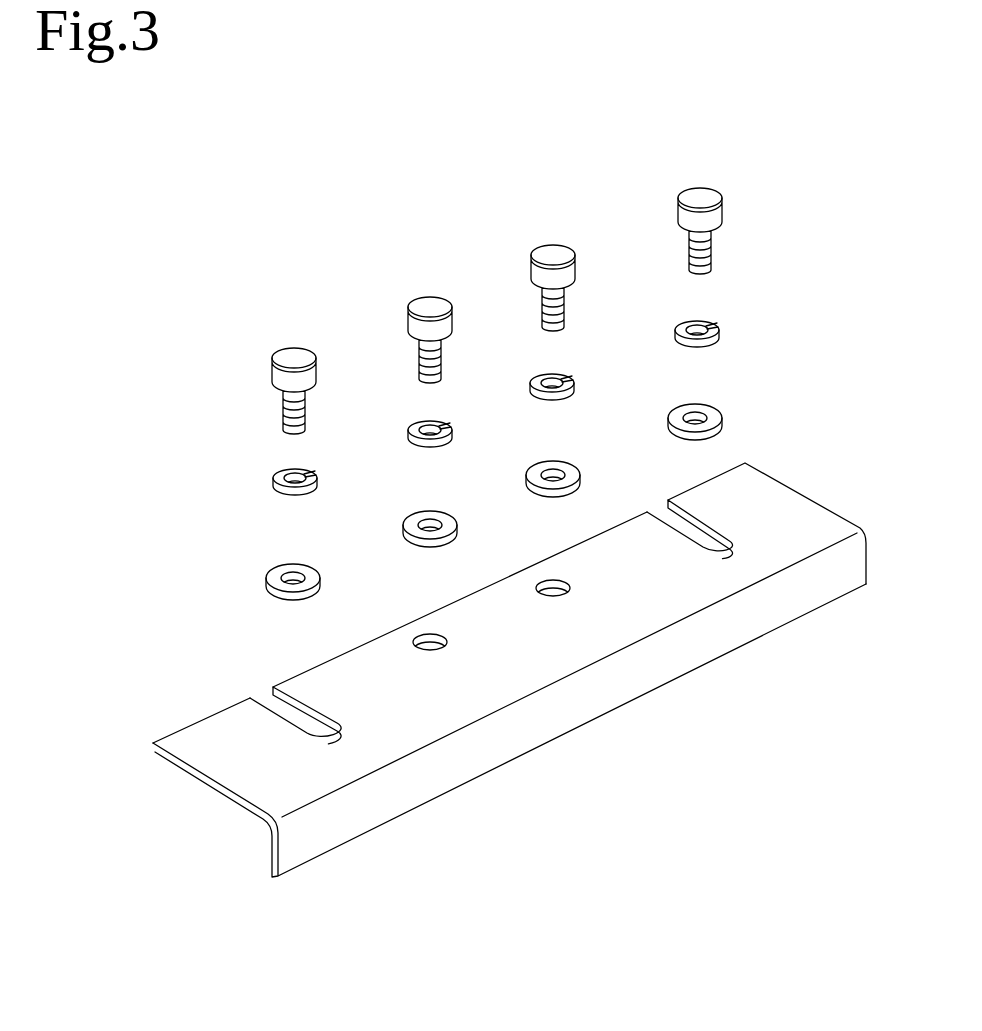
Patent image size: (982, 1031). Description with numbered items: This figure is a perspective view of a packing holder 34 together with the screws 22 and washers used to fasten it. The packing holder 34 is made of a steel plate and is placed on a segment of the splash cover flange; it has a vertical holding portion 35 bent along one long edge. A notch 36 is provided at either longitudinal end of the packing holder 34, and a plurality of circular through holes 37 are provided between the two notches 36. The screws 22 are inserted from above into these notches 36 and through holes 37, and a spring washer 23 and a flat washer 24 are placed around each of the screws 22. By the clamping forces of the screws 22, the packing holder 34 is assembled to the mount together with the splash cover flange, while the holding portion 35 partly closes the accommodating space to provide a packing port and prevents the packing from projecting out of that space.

The screw 22 is at (700, 188).
The spring washer 23 is at (676, 337).
The flat washer 24 is at (763, 431).
The packing holder 34 is at (222, 792).
The holding portion 35 is at (593, 720).
The notch 36 is at (707, 540).
The through hole 37 is at (570, 625).